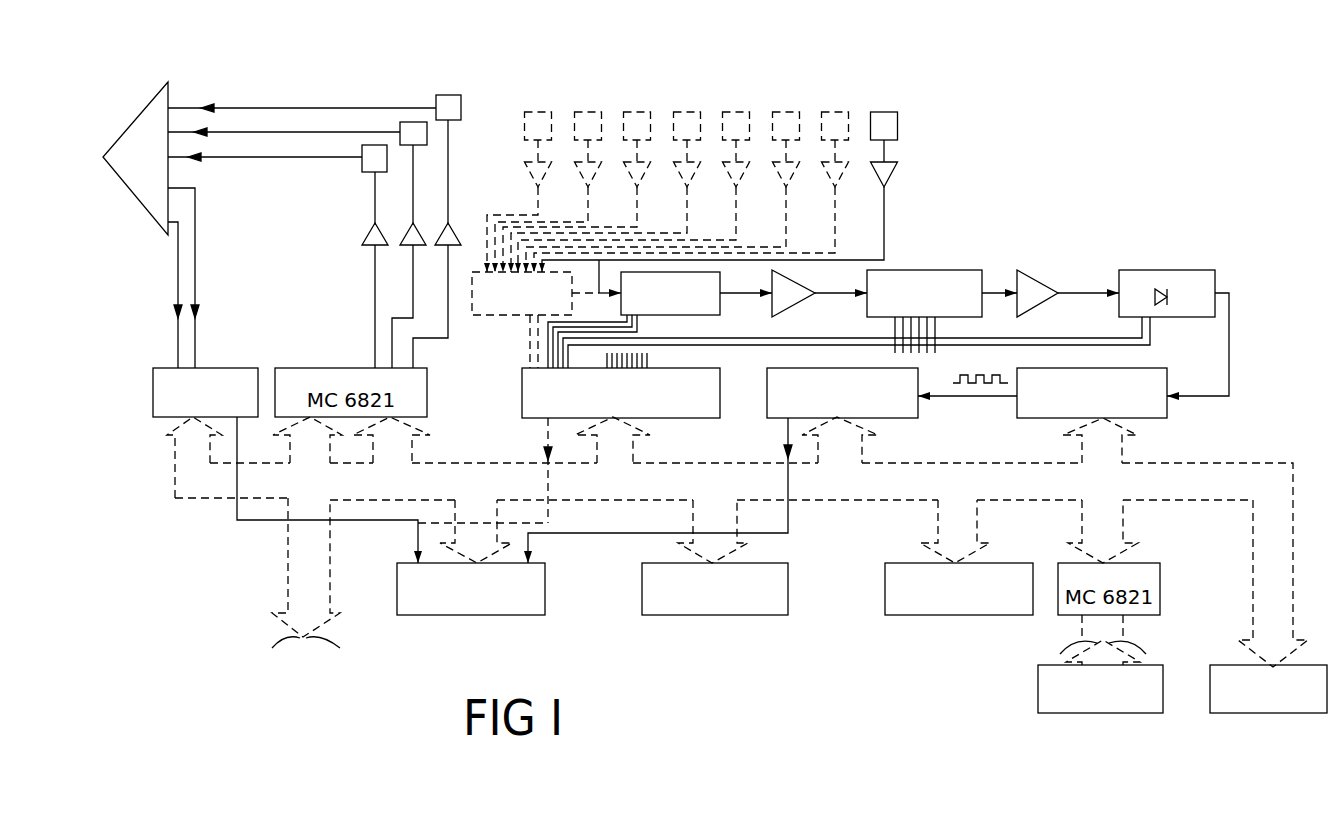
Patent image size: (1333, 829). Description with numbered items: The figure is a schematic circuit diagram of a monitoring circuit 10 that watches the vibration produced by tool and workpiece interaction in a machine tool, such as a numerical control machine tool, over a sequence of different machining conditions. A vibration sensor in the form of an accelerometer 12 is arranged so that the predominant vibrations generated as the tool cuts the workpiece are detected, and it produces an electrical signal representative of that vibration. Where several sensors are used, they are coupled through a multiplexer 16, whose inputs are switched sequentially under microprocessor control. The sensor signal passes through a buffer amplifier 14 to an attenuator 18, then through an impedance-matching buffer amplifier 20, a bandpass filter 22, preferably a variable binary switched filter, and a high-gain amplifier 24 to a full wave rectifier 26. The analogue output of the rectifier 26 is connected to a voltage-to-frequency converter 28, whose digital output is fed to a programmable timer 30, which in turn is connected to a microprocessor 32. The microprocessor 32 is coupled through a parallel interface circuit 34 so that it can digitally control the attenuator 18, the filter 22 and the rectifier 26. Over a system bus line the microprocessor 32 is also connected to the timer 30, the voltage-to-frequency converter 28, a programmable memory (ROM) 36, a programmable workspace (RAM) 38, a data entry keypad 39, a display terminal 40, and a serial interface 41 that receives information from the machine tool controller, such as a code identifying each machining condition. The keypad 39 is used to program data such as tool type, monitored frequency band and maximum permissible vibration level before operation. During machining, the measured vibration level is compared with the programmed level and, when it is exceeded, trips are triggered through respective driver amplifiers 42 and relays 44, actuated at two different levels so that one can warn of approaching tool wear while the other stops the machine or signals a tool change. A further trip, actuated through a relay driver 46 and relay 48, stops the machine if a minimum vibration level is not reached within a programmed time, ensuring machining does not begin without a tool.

The circuit 10 is at (990, 200).
The accelerometer 12 is at (888, 122).
The buffer amplifier 14 is at (895, 167).
The multiplexer 16 is at (490, 318).
The attenuator 18 is at (705, 300).
The impedance-matching buffer amplifier 20 is at (793, 298).
The bandpass filter 22 is at (940, 283).
The high-gain amplifier 24 is at (1033, 290).
The full wave rectifier 26 is at (1180, 283).
The voltage-to-frequency converter 28 is at (1137, 378).
The programmable timer 30 is at (905, 383).
The microprocessor 32 is at (535, 597).
The parallel interface circuit 34 is at (522, 404).
The programmable memory (ROM) 36 is at (748, 606).
The programmable workspace (RAM) 38 is at (928, 606).
The data entry keypad 39 is at (1082, 703).
The display terminal 40 is at (1247, 703).
The serial interface 41 is at (216, 382).
The driver amplifiers 42 is at (414, 237).
The relays 44 is at (415, 130).
The relay driver 46 is at (372, 233).
The relay 48 is at (368, 160).